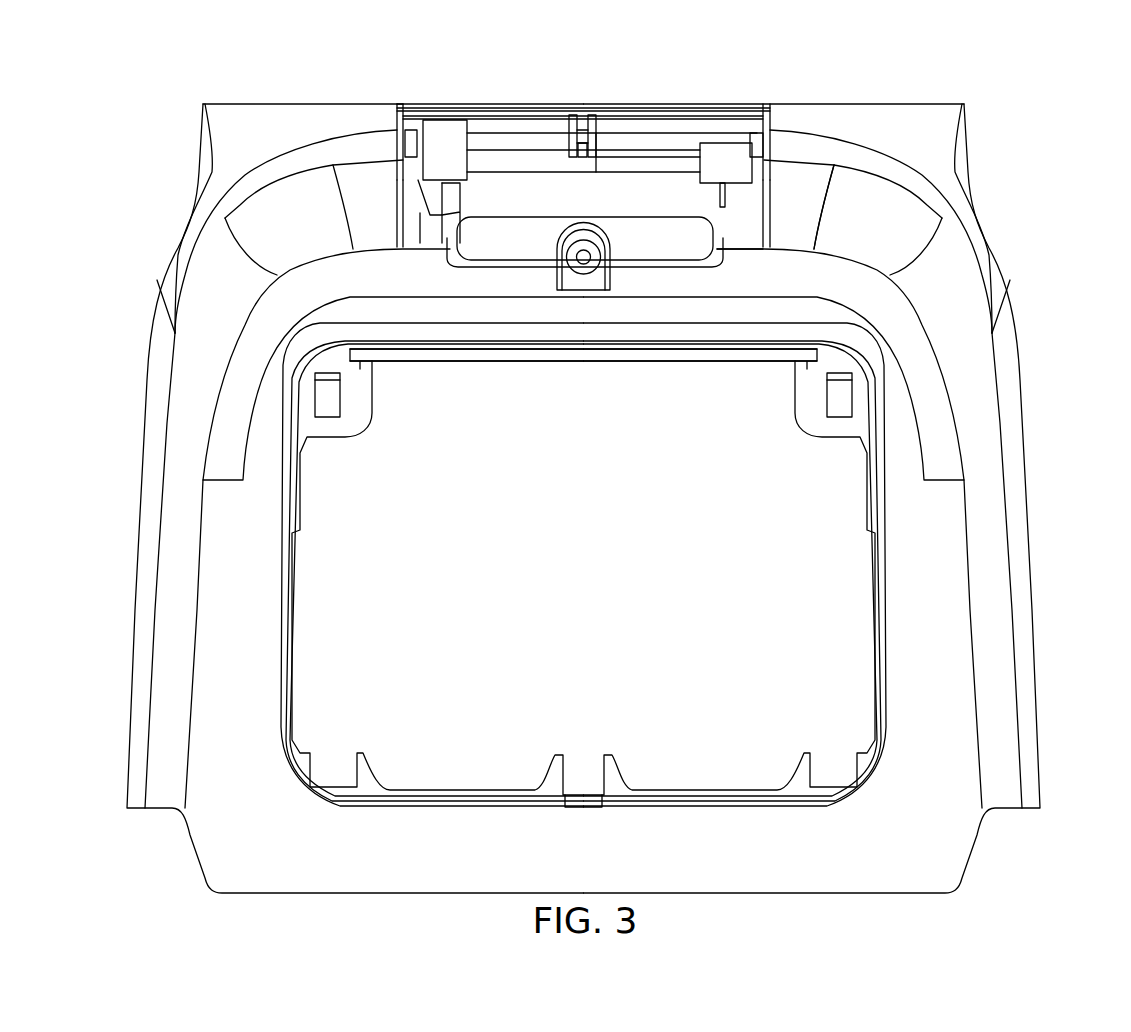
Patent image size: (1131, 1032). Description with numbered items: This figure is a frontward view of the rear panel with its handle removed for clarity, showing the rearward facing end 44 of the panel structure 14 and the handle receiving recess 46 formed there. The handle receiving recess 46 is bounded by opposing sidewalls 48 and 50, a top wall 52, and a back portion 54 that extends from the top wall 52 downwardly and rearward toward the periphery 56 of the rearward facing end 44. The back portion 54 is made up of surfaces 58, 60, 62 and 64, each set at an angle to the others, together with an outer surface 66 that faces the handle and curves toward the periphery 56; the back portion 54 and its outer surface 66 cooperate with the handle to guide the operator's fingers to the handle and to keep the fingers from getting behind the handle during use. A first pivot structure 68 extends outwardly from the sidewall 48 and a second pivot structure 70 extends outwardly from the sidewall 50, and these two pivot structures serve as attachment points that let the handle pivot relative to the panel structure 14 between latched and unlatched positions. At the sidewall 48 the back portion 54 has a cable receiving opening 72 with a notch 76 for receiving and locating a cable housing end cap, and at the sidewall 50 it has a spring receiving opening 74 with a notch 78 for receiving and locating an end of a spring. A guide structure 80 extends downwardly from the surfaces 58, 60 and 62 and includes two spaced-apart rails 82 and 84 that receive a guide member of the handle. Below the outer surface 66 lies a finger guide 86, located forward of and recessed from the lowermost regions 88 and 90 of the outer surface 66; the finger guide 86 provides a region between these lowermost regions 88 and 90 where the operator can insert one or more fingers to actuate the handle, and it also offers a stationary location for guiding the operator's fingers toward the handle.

The panel structure 14 is at (618, 452).
The rearward facing end 44 is at (940, 183).
The handle receiving recess 46 is at (596, 154).
The sidewall 48 is at (417, 173).
The sidewall 50 is at (757, 203).
The top wall 52 is at (487, 117).
The back portion 54 is at (504, 223).
The periphery 56 is at (787, 237).
The surface 58 is at (553, 118).
The surface 60 is at (617, 127).
The surface 62 is at (647, 143).
The surface 64 is at (680, 160).
The outer surface 66 is at (647, 210).
The first pivot structure 68 is at (410, 132).
The second pivot structure 70 is at (753, 140).
The cable receiving opening 72 is at (442, 128).
The spring receiving opening 74 is at (748, 172).
The notch 76 is at (427, 213).
The notch 78 is at (719, 193).
The guide structure 80 is at (583, 107).
The rail 82 is at (573, 140).
The rail 84 is at (593, 140).
The finger guide 86 is at (530, 256).
The lowermost region 88 is at (435, 223).
The lowermost region 90 is at (740, 227).